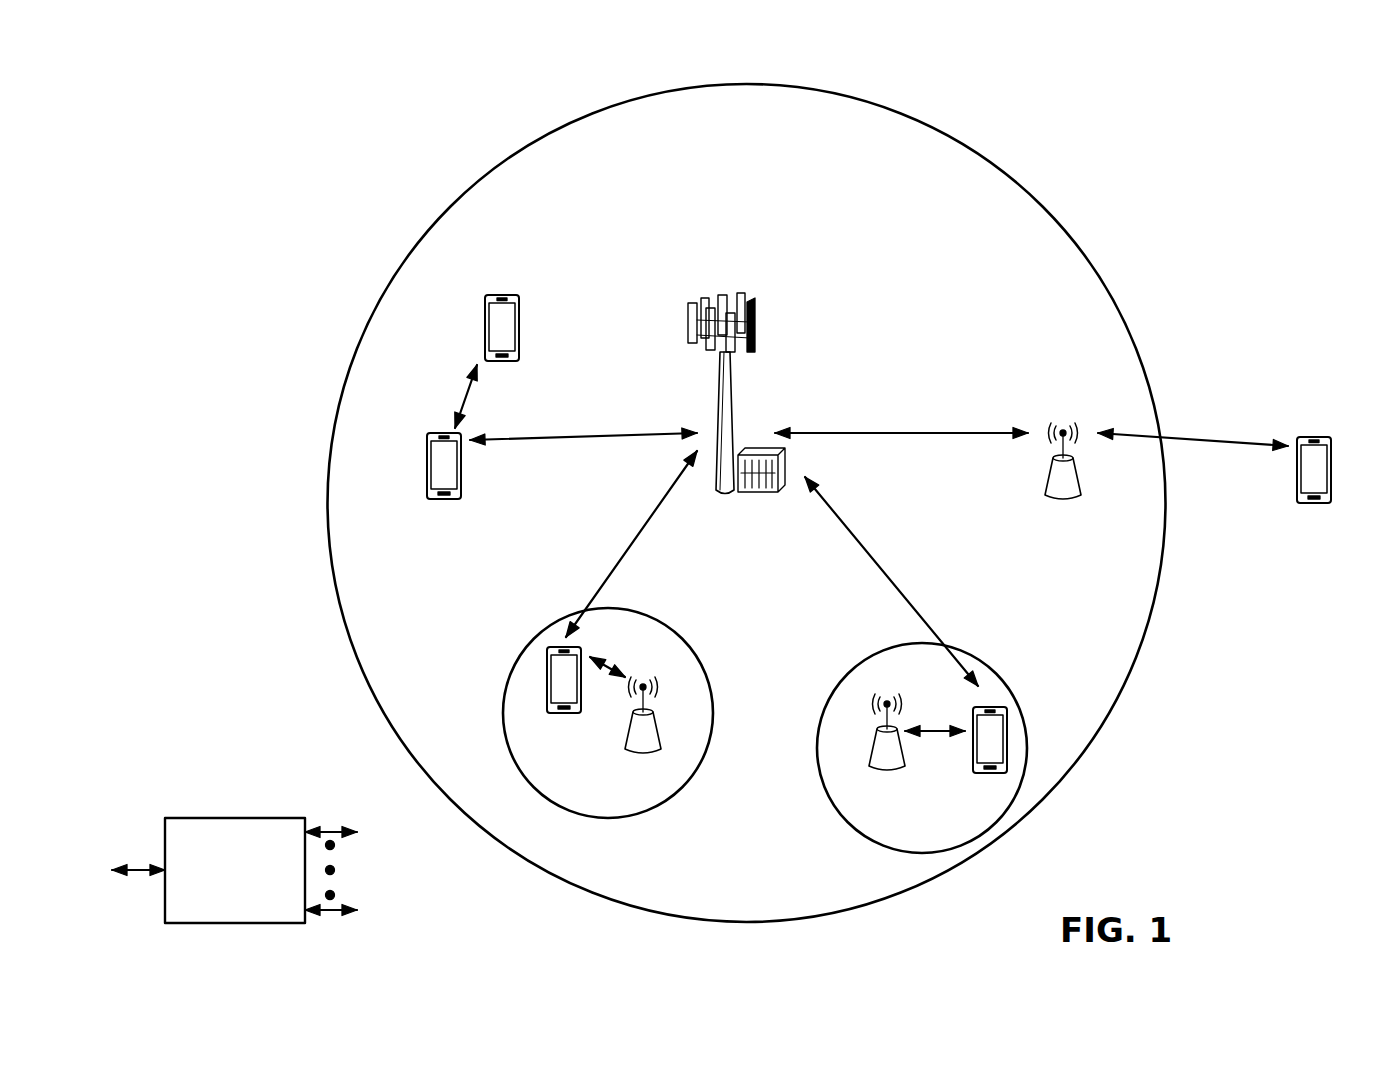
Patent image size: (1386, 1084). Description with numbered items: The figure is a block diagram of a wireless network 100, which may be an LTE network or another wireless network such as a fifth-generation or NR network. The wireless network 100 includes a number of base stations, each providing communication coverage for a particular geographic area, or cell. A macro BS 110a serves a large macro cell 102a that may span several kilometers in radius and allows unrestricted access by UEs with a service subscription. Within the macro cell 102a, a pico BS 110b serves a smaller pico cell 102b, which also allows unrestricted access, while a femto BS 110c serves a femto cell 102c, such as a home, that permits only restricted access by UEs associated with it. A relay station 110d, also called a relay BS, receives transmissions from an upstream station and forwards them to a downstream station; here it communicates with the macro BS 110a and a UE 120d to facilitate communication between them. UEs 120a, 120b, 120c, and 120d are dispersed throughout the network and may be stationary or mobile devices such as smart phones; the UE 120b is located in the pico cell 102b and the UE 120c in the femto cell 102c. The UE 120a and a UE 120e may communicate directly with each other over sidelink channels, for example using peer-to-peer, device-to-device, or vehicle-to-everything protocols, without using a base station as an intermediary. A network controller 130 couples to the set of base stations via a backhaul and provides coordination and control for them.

The wireless network 100 is at (213, 77).
The macro cell 102a is at (1027, 188).
The pico cell 102b is at (698, 650).
The femto cell 102c is at (862, 659).
The macro BS 110a is at (748, 287).
The pico BS 110b is at (664, 743).
The femto BS 110c is at (871, 761).
The relay station 110d is at (1063, 426).
The UE 120a is at (427, 462).
The UE 120b is at (548, 713).
The UE 120c is at (972, 773).
The UE 120d is at (1327, 436).
The UE 120e is at (487, 316).
The network controller 130 is at (232, 818).